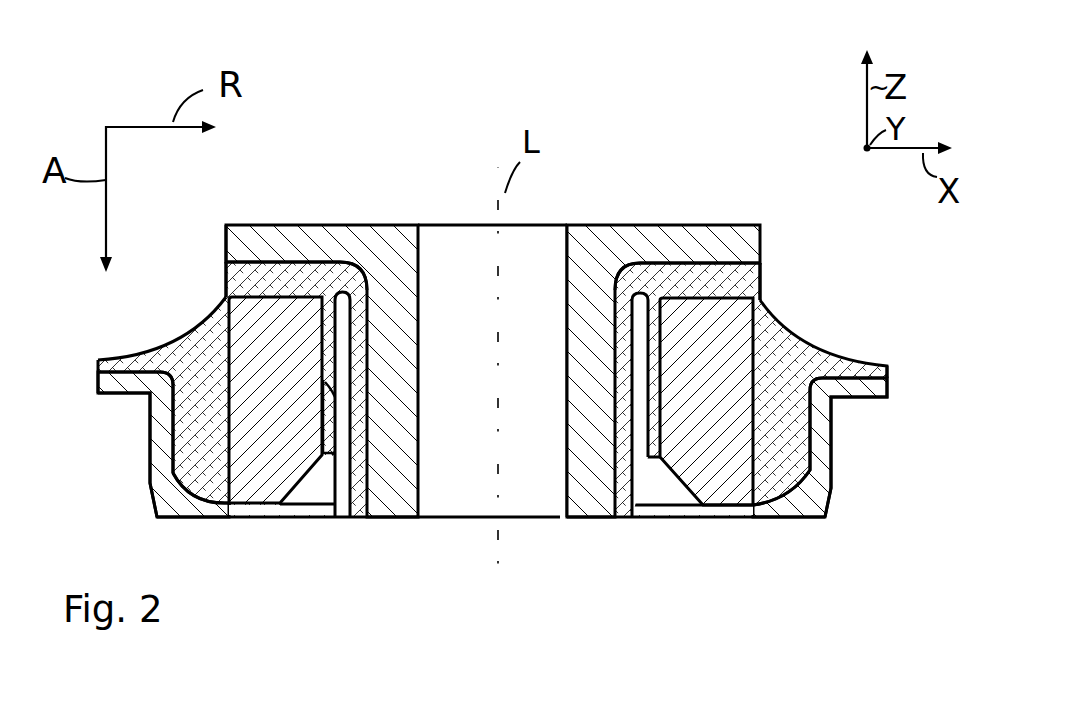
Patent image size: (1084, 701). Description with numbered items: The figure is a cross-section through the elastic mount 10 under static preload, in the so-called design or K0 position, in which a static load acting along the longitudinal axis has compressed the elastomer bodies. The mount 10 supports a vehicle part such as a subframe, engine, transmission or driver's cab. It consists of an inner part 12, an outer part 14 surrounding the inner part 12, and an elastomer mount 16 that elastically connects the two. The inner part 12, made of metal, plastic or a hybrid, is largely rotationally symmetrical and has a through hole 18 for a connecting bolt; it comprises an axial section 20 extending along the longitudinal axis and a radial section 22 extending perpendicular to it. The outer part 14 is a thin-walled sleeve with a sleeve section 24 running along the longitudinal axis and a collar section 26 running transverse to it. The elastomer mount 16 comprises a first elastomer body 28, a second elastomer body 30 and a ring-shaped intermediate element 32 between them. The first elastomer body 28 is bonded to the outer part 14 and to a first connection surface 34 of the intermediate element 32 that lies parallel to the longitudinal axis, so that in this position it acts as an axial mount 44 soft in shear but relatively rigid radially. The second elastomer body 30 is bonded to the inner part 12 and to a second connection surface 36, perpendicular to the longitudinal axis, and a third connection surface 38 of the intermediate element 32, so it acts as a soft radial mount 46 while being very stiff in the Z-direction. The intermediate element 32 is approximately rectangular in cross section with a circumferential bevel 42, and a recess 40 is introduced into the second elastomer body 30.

The elastic mount 10 is at (738, 168).
The inner part 12 is at (600, 232).
The outer part 14 is at (837, 448).
The elastomer mount 16 is at (800, 284).
The through hole 18 is at (425, 257).
The axial section 20 is at (580, 383).
The radial section 22 is at (657, 238).
The sleeve section 24 is at (163, 443).
The collar section 26 is at (135, 383).
The first elastomer body 28 is at (183, 347).
The second elastomer body 30 is at (293, 283).
The intermediate element 32 is at (257, 482).
The first connection surface 34 is at (225, 330).
The second connection surface 36 is at (255, 295).
The third connection surface 38 is at (337, 460).
The recess 40 is at (640, 393).
The circumferential bevel 42 is at (298, 482).
The axial mount 44 is at (193, 489).
The soft radial mount 46 is at (766, 272).